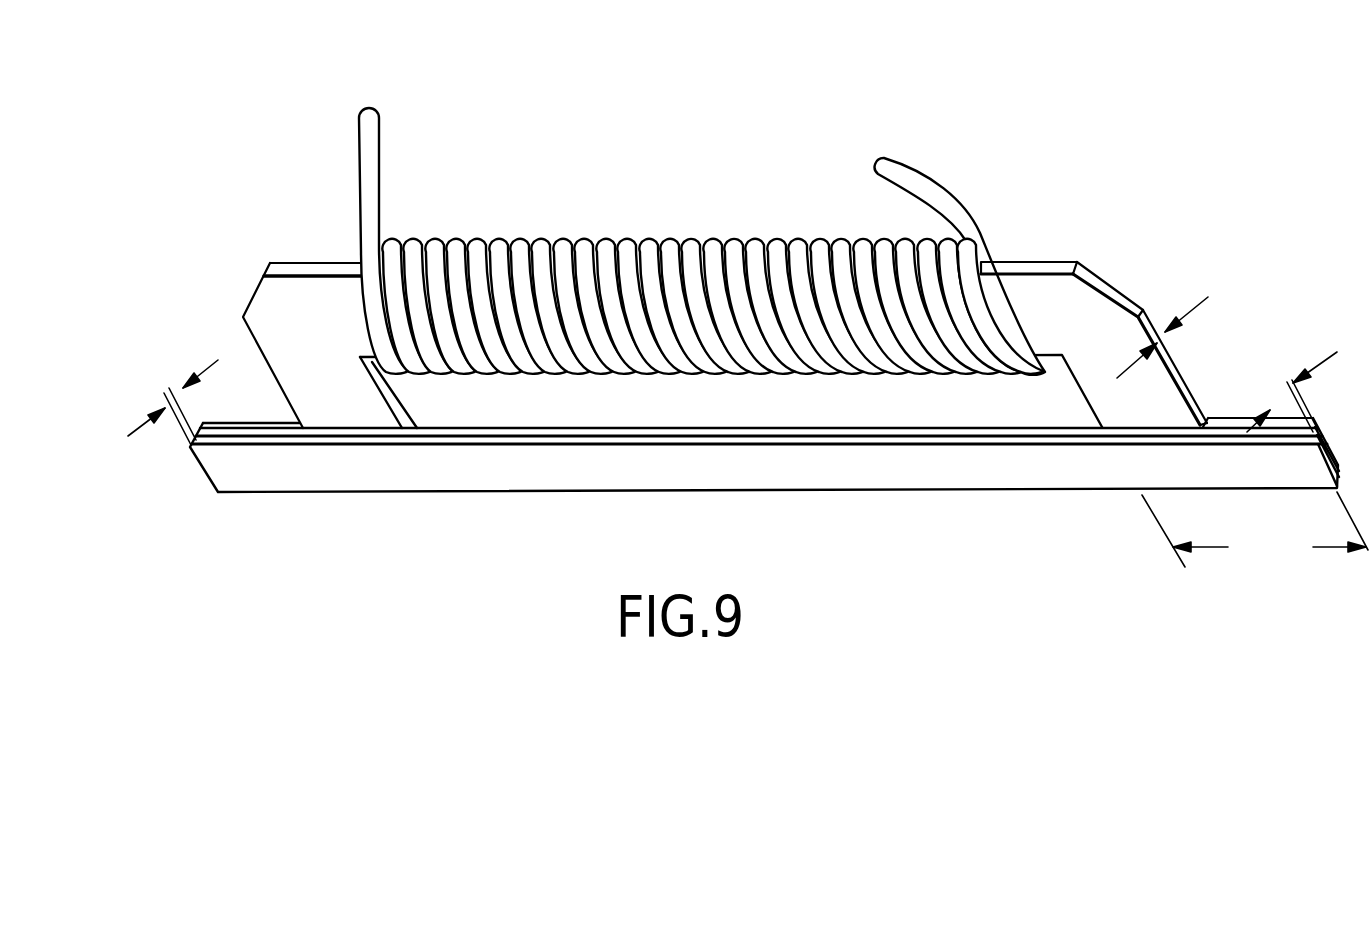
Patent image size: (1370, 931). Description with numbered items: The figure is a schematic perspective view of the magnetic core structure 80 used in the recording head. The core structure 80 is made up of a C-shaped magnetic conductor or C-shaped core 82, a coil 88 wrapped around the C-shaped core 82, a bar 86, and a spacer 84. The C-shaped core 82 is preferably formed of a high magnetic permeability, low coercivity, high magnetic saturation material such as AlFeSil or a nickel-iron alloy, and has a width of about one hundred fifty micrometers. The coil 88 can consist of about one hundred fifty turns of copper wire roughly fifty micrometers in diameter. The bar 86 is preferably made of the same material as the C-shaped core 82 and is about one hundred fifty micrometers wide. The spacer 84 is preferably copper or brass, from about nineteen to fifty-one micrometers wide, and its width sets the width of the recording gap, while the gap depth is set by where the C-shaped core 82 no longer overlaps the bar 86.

The core structure 80 is at (940, 114).
The C-shaped core 82 is at (282, 308).
The spacer 84 is at (920, 427).
The bar 86 is at (857, 477).
The coil 88 is at (562, 240).